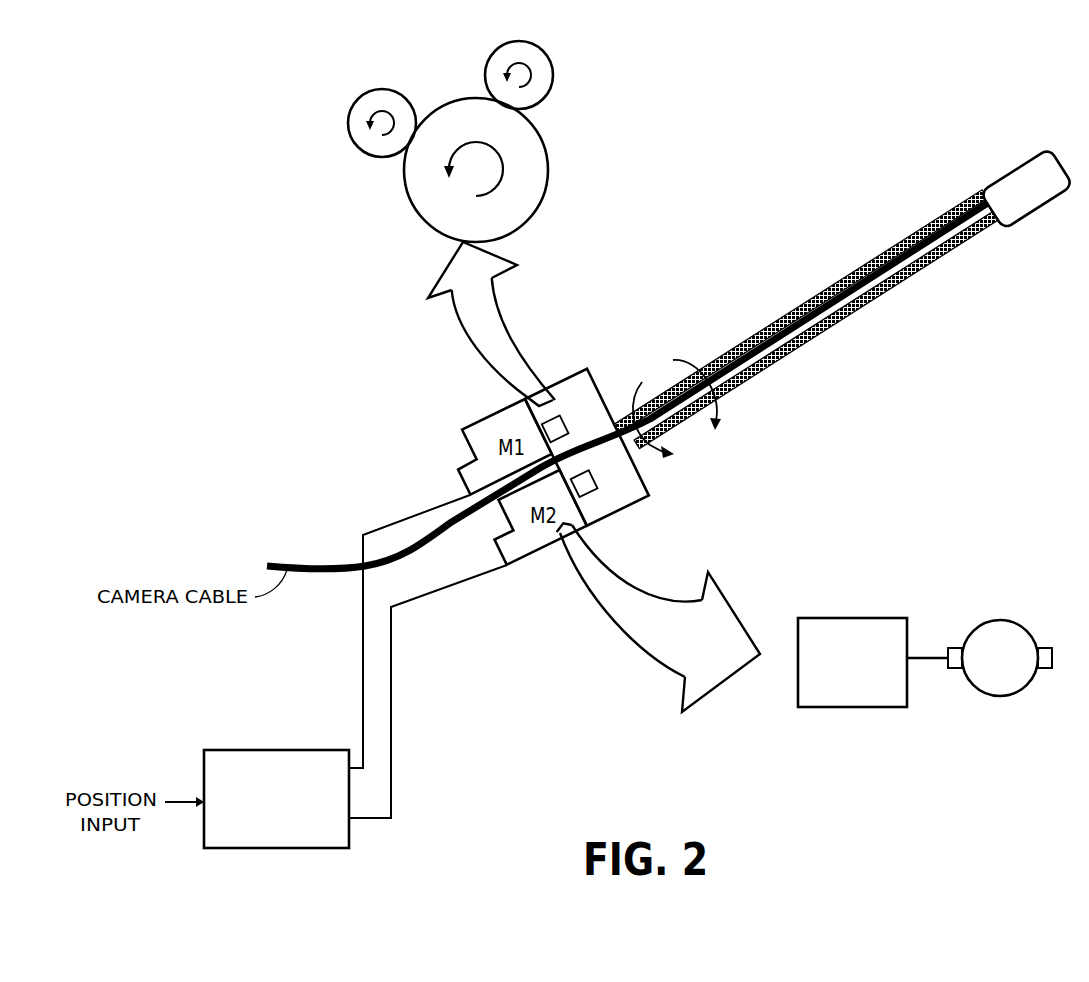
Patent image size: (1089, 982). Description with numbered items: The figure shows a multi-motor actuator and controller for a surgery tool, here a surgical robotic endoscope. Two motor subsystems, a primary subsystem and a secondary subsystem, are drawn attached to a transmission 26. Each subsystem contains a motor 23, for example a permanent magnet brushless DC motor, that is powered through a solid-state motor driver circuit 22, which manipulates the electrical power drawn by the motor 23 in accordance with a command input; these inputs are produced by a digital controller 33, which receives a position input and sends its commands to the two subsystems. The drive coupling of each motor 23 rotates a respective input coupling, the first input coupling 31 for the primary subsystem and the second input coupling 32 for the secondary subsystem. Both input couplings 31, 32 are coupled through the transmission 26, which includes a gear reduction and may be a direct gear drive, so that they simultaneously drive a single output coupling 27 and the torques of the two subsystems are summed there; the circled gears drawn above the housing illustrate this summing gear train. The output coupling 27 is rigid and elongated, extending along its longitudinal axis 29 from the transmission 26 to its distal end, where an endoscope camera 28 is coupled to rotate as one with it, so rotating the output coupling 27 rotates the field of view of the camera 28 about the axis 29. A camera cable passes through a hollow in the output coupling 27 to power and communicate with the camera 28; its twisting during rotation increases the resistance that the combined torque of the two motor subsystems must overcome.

The motor driver circuit 22 is at (875, 618).
The motor 23 is at (1000, 618).
The transmission 26 is at (549, 400).
The output coupling 27 is at (548, 153).
The endoscope camera 28 is at (1020, 180).
The longitudinal axis 29 is at (882, 283).
The first input coupling 31 is at (357, 99).
The second input coupling 32 is at (552, 58).
The digital controller 33 is at (298, 849).